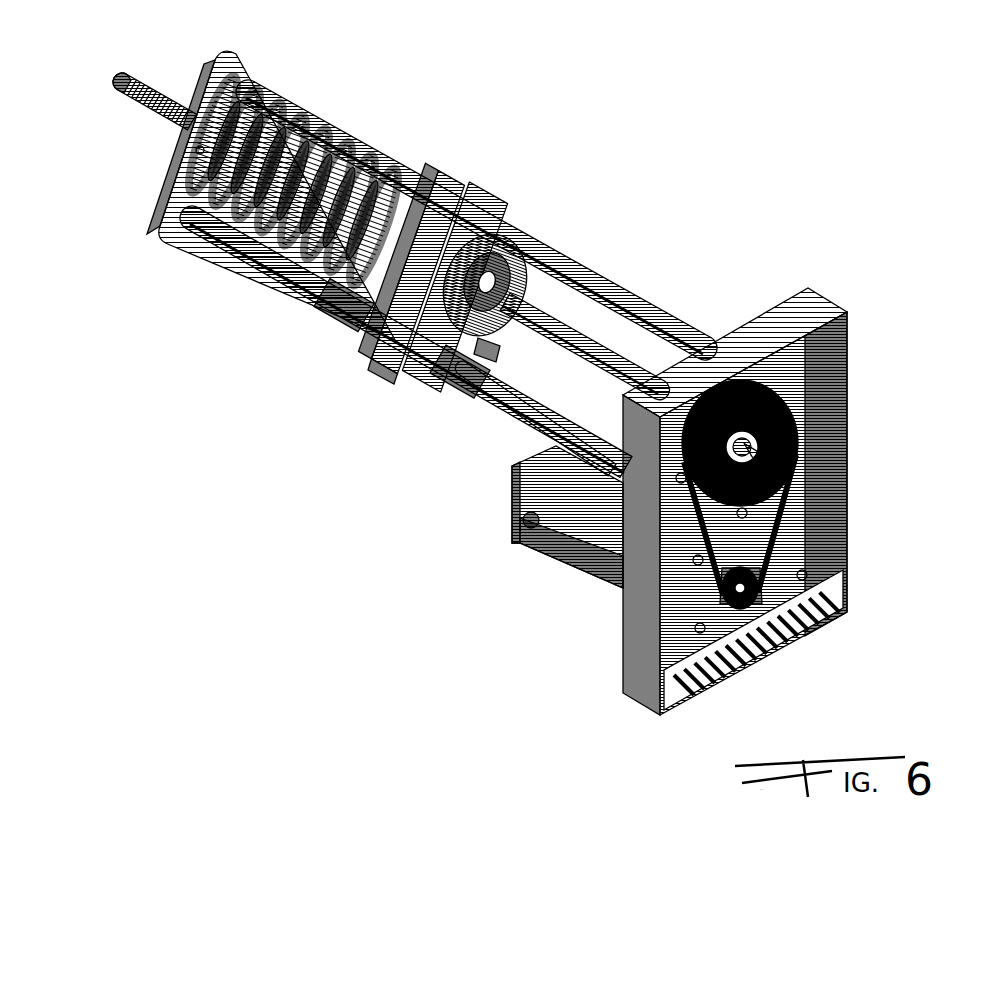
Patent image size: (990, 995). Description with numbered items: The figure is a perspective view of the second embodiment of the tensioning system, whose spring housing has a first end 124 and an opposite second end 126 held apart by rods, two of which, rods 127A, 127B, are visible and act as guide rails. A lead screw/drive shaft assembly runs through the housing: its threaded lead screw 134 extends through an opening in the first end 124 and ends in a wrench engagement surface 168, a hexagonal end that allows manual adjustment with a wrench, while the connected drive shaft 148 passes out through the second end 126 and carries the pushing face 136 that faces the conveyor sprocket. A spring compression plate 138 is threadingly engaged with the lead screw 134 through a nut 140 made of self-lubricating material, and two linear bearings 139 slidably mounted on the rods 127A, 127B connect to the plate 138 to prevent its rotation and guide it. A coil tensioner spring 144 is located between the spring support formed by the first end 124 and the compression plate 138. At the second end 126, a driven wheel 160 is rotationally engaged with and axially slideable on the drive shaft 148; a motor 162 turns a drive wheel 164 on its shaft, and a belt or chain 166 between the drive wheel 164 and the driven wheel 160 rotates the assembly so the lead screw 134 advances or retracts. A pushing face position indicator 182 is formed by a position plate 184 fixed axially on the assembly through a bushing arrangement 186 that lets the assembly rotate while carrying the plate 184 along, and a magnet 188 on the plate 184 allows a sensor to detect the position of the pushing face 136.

The first end 124 is at (237, 55).
The second end 126 is at (822, 303).
The rod 127A is at (252, 262).
The rod 127B is at (337, 140).
The threaded lead screw 134 is at (148, 122).
The pushing face 136 is at (783, 470).
The spring compression plate 138 is at (430, 177).
The linear bearing 139 is at (345, 320).
The nut 140 is at (430, 195).
The tensioner spring 144 is at (347, 187).
The drive shaft 148 is at (577, 343).
The driven wheel 160 is at (787, 420).
The motor 162 is at (577, 560).
The drive wheel 164 is at (757, 570).
The belt or chain 166 is at (767, 523).
The wrench engagement surface 168 is at (130, 72).
The pushing face position indicator 182 is at (404, 385).
The position plate 184 is at (493, 210).
The bushing arrangement 186 is at (487, 267).
The magnet 188 is at (495, 348).